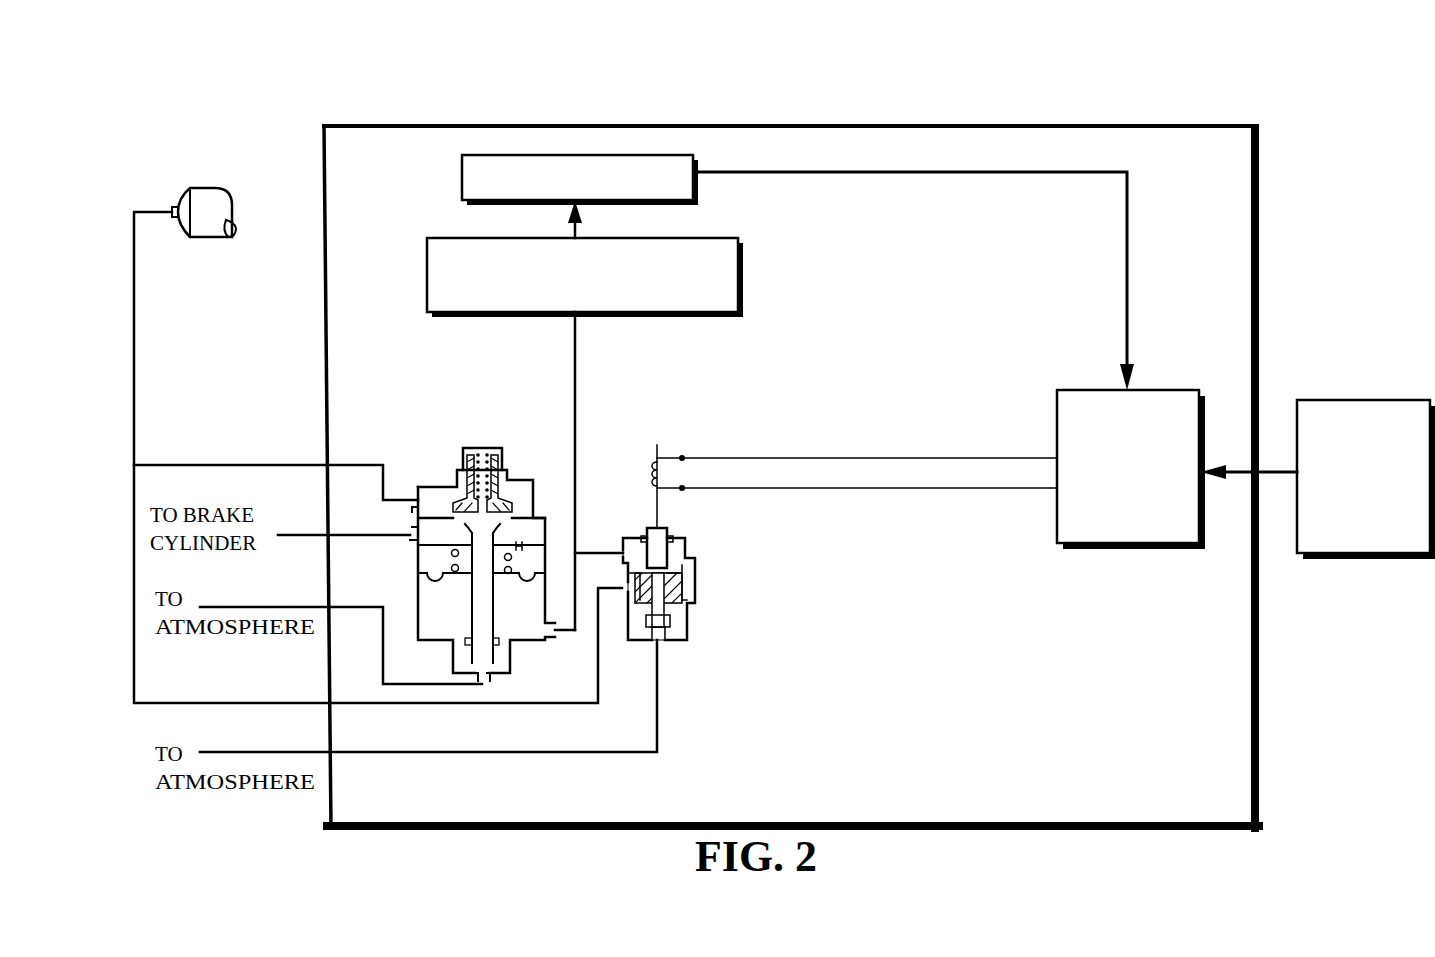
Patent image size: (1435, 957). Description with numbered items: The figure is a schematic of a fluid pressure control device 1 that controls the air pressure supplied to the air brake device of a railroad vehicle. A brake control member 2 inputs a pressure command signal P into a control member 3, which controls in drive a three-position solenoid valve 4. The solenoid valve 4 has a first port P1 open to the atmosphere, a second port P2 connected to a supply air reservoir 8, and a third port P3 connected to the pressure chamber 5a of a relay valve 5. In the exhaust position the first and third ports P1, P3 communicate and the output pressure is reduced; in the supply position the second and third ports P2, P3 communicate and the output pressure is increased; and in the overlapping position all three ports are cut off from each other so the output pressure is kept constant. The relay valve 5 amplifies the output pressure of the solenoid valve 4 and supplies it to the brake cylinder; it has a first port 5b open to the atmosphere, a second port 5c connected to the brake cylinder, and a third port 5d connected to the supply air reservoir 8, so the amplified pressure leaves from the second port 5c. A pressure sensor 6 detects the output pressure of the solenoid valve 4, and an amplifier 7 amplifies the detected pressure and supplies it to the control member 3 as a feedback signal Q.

The fluid pressure control device 1 is at (1258, 203).
The brake control member 2 is at (1362, 400).
The control member 3 is at (1168, 390).
The 3-position solenoid valve 4 is at (690, 632).
The relay valve 5 is at (460, 605).
The pressure chamber 5a is at (447, 632).
The first port of the relay valve 5b is at (490, 682).
The second port of the relay valve 5c is at (410, 537).
The third port of the relay valve 5d is at (413, 497).
The pressure sensor 6 is at (427, 273).
The amplifier 7 is at (462, 179).
The supply air reservoir 8 is at (207, 196).
The pressure command signal P is at (1234, 470).
The feedback signal Q is at (744, 172).
The first port of the solenoid valve P1 is at (658, 645).
The second port of the solenoid valve P2 is at (626, 594).
The third port of the solenoid valve P3 is at (623, 548).